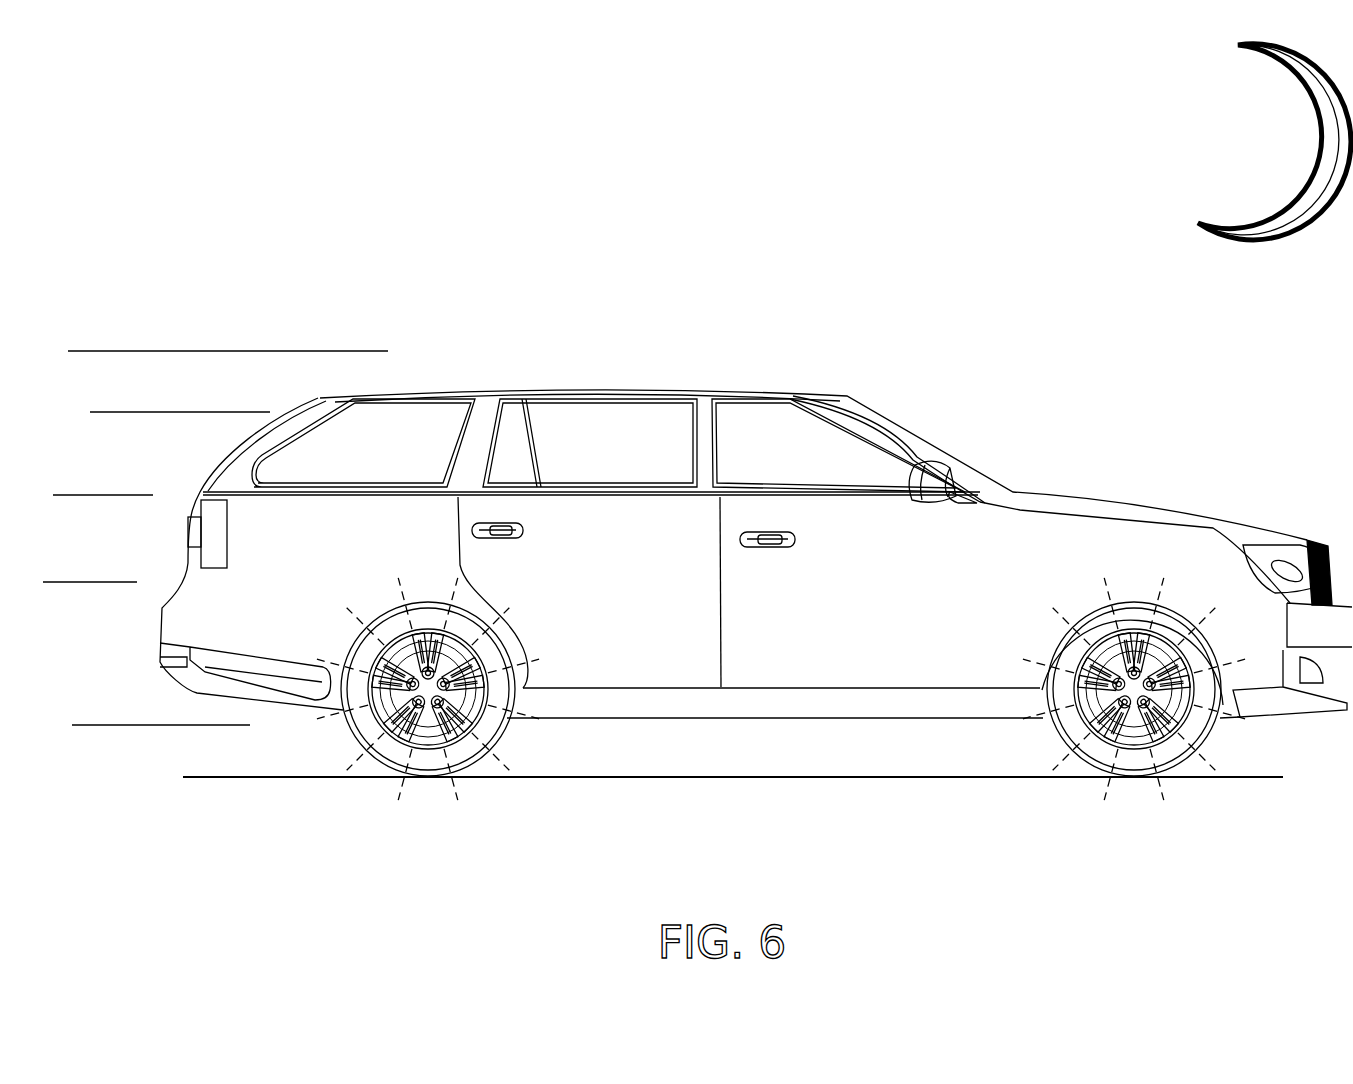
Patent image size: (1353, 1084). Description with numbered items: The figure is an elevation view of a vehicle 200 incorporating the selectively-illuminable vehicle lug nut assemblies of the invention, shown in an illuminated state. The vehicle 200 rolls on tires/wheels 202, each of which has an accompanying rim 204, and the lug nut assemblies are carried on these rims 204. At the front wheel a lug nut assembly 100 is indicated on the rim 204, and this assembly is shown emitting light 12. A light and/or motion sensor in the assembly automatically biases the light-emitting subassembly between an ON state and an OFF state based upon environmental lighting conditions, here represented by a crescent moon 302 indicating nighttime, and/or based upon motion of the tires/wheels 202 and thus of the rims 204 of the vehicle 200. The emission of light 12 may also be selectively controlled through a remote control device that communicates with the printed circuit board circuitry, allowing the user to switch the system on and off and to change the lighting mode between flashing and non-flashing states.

The vehicle 200 is at (833, 624).
The tires/wheels 202 is at (462, 748).
The rims 204 is at (1142, 628).
The wheel-mounted device 100 is at (1148, 664).
The light 12 is at (1100, 782).
The environmental lighting condition 302 is at (1247, 147).